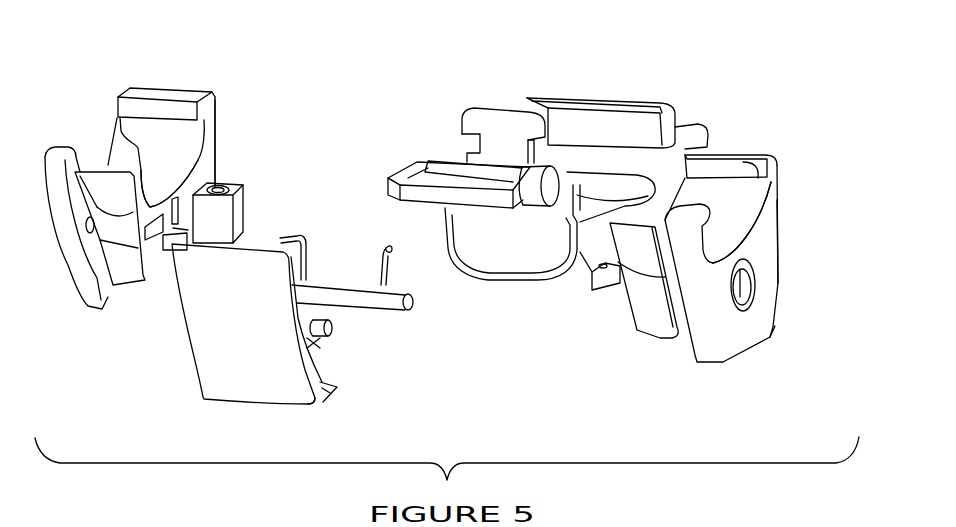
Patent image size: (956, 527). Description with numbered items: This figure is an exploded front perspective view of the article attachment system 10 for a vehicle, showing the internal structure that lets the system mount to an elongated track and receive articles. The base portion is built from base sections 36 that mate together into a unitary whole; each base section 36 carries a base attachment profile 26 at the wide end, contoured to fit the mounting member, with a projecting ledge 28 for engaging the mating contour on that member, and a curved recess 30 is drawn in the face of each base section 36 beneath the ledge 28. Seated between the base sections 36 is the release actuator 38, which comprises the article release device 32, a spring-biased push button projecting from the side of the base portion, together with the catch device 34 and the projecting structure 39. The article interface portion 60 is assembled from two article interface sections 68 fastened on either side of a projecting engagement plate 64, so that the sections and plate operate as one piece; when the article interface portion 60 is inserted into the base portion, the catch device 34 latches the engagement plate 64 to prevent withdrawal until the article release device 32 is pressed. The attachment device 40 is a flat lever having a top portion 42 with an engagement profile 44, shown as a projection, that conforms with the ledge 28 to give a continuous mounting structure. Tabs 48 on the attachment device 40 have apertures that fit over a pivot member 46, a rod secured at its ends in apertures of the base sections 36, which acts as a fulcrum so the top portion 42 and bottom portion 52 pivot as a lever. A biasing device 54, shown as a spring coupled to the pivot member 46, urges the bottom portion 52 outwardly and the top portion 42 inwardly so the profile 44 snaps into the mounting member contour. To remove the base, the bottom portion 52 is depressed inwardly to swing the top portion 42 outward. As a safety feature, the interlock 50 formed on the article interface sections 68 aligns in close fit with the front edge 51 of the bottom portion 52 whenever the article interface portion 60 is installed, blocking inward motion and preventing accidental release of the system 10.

The attachment system 10 is at (723, 32).
The base attachment profile 26 is at (98, 136).
The ledge 28 is at (146, 108).
The curved recess 30 is at (153, 173).
The article release device 32 is at (535, 197).
The catch device 34 is at (395, 178).
The base sections 36 is at (212, 132).
The release actuator 38 is at (442, 153).
The projecting structure 39 is at (422, 196).
The attachment device 40 is at (197, 333).
The top portion 42 is at (187, 263).
The engagement profile 44 is at (310, 253).
The pivot member 46 is at (394, 300).
The tabs 48 is at (312, 342).
The interlock 50 is at (632, 132).
The front edge 51 is at (337, 385).
The bottom portion 52 is at (330, 404).
The biasing device 54 is at (377, 275).
The article interface portion 60 is at (590, 157).
The engagement plate 64 is at (470, 122).
The article interface sections 68 is at (595, 150).